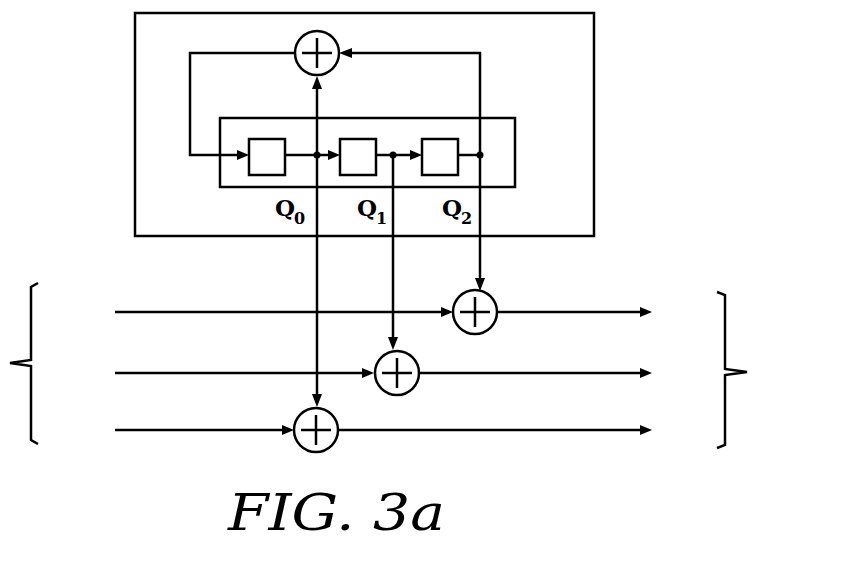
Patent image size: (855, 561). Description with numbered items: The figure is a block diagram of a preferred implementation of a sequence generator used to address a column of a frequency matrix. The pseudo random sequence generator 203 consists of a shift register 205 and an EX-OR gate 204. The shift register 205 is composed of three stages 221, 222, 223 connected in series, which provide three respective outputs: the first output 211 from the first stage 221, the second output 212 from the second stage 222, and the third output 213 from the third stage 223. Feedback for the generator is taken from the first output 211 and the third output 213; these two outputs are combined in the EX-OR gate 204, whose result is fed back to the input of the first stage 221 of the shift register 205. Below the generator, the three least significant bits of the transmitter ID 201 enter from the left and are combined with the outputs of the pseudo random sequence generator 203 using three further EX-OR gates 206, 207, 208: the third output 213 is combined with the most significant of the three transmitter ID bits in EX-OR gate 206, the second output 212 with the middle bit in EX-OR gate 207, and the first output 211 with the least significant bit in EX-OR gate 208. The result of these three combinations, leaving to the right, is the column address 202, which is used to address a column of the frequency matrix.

The three least significant bits of the transmitter ID 201 is at (35, 286).
The column address 202 is at (725, 293).
The pseudo random sequence generator 203 is at (135, 78).
The EX-OR gate 204 is at (296, 48).
The shift register 205 is at (505, 118).
The EX-OR gate 206 is at (490, 328).
The EX-OR gate 207 is at (413, 389).
The EX-OR gate 208 is at (333, 446).
The output Q0 211 is at (317, 250).
The output Q1 212 is at (393, 250).
The output Q2 213 is at (480, 250).
The first stage 221 is at (276, 139).
The second stage 222 is at (368, 139).
The third stage 223 is at (442, 139).